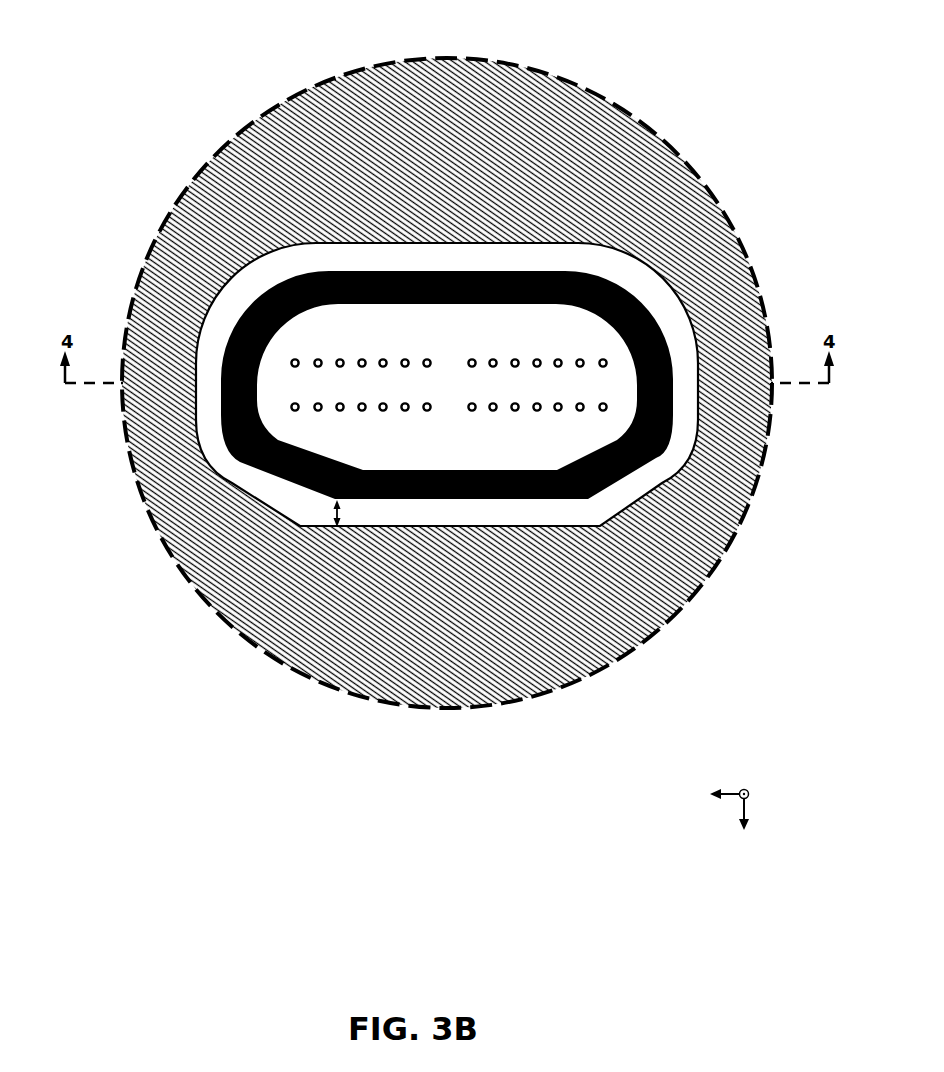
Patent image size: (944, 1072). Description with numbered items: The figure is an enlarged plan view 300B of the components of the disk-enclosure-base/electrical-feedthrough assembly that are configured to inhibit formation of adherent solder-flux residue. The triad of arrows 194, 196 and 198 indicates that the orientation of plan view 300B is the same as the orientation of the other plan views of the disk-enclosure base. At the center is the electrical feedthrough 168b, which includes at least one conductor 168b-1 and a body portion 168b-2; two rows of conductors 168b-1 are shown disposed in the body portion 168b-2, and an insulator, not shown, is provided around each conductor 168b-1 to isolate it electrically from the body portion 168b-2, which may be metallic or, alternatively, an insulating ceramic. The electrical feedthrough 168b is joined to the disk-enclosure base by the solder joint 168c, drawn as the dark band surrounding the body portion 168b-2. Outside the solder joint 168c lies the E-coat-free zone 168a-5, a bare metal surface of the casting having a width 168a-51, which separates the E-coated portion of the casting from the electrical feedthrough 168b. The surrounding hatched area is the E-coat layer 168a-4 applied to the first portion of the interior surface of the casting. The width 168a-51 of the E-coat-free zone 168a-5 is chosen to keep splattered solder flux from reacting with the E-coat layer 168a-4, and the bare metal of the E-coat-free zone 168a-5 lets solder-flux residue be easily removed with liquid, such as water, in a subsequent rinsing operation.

The plan view 300B is at (150, 96).
The E-coat layer 168a-4 is at (268, 578).
The E-coat-free zone 168a-5 is at (520, 510).
The width 168a-51 is at (336, 512).
The solder joint 168c is at (460, 503).
The electrical feedthrough 168b is at (446, 561).
The conductor 168b-1 is at (383, 407).
The body portion 168b-2 is at (448, 387).
The arrow 194 is at (752, 773).
The arrow 196 is at (747, 800).
The arrow 198 is at (749, 792).